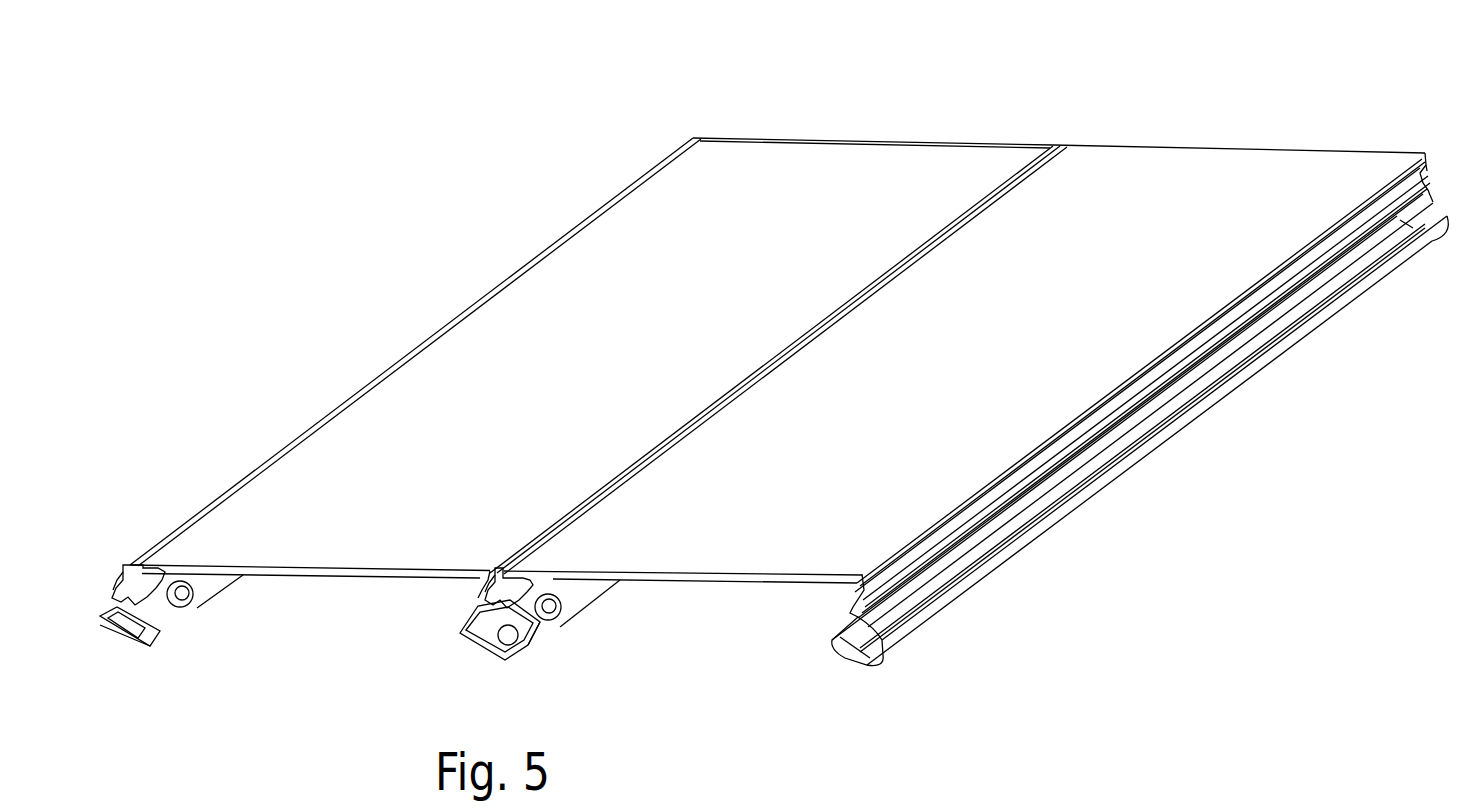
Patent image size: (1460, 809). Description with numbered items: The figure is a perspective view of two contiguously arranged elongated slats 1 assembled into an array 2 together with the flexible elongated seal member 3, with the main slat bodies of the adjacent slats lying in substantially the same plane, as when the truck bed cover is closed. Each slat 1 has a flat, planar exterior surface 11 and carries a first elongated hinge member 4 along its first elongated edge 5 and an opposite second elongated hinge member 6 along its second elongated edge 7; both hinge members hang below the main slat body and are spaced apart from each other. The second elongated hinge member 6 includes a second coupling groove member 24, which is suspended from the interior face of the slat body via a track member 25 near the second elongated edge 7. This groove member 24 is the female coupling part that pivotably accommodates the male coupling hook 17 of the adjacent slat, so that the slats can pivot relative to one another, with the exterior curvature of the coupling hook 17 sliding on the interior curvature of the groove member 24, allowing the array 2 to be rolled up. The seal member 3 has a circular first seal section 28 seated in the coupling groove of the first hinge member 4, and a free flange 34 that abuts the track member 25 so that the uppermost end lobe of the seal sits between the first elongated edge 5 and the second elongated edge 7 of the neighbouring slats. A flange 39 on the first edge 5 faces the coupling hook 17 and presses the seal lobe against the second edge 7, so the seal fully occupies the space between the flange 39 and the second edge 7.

The slat 1 is at (947, 153).
The array 2 is at (803, 114).
The flexible elongated seal member 3 is at (131, 585).
The first elongated hinge member 4 is at (113, 645).
The first elongated edge 5 is at (446, 320).
The second elongated hinge member 6 is at (468, 645).
The second elongated edge 7 is at (855, 280).
The exterior surface 11 is at (1100, 205).
The coupling hook 17 is at (105, 628).
The second coupling groove member 24 is at (462, 628).
The track member 25 is at (478, 590).
The first seal section 28 is at (180, 595).
The free flange 34 is at (118, 578).
The flange 39 is at (297, 440).